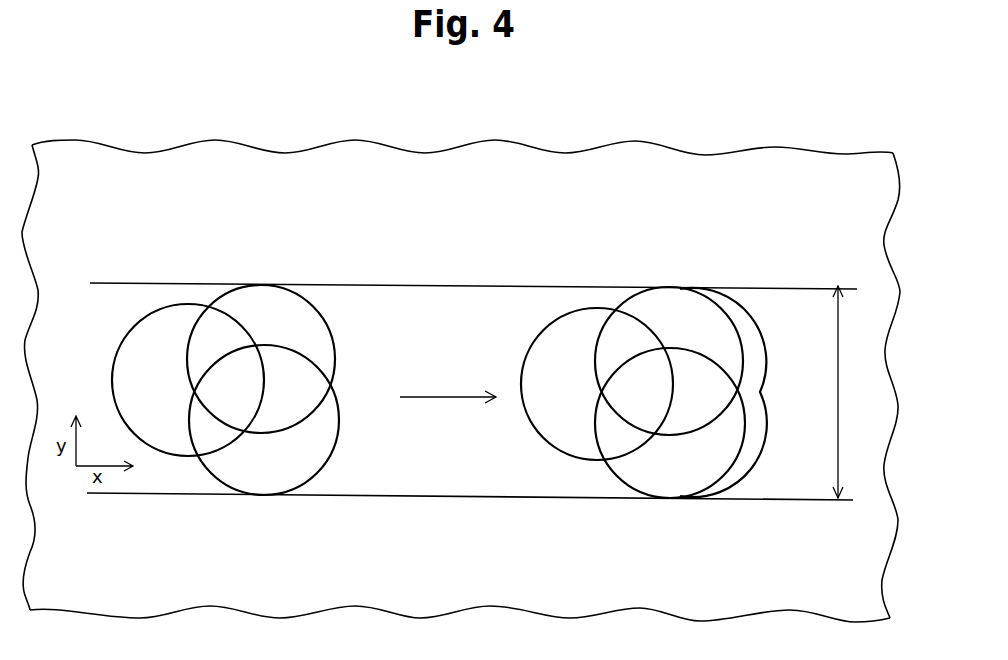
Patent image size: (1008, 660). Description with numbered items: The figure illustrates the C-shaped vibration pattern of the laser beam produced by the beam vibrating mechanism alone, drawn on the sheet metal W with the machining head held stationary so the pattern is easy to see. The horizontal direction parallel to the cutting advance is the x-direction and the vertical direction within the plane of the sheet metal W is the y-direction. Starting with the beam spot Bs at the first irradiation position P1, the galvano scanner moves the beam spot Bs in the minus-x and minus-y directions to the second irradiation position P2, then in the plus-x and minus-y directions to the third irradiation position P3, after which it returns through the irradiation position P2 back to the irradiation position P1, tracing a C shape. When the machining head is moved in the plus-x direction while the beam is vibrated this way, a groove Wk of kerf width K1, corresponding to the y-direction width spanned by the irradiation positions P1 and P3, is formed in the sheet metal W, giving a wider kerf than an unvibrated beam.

The sheet metal W is at (637, 155).
The groove Wk is at (418, 289).
The beam spot Bs is at (133, 328).
The irradiation position P1 is at (478, 312).
The irradiation position P2 is at (348, 382).
The irradiation position P3 is at (474, 468).
The kerf width K1 is at (852, 392).